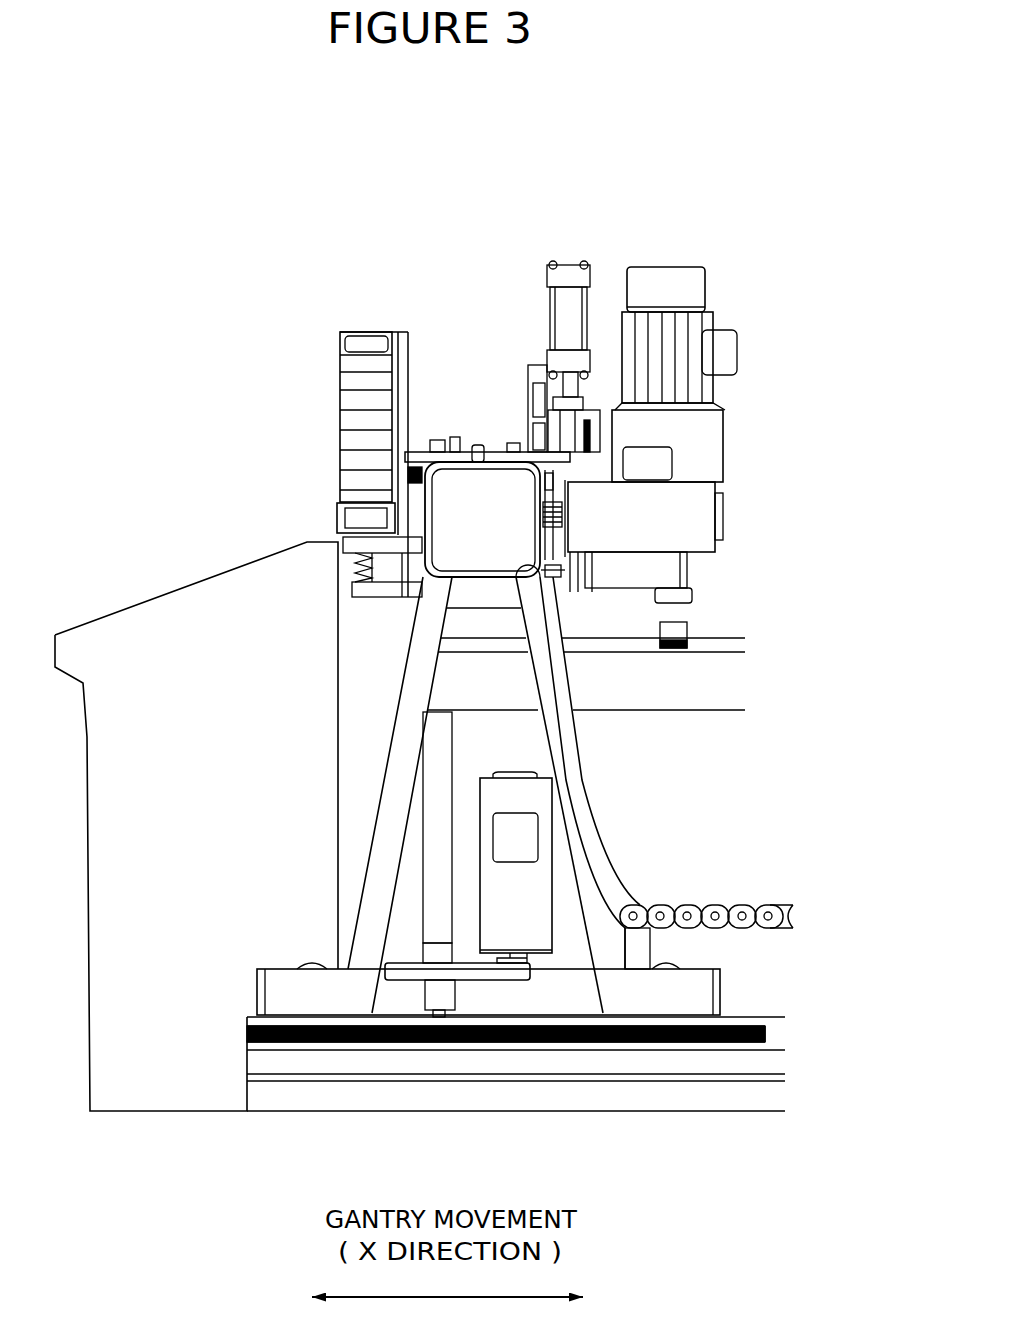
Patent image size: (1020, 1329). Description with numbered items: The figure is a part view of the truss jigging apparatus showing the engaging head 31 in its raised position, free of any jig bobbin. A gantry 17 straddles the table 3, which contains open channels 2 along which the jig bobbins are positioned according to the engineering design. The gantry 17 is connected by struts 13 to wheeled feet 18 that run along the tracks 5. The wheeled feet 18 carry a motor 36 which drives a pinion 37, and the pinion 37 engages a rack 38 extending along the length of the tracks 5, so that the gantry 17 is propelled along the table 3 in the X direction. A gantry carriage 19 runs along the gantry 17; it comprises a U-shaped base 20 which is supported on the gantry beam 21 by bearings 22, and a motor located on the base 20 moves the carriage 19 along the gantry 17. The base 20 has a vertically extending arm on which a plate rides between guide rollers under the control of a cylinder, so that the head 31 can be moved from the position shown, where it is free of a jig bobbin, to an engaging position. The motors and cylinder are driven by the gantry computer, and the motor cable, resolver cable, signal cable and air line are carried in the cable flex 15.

The open channel 2 is at (690, 640).
The table 3 is at (707, 682).
The tracks 5 is at (760, 1020).
The struts 13 is at (417, 687).
The cable flex 15 is at (363, 400).
The gantry 17 is at (263, 427).
The wheeled feet 18 is at (285, 995).
The gantry carriage 19 is at (420, 445).
The U-shaped base 20 is at (493, 452).
The gantry beam 21 is at (430, 525).
The bearings 22 is at (420, 483).
The head 31 is at (695, 582).
The motor 36 is at (536, 797).
The pinion 37 is at (443, 1040).
The rack 38 is at (590, 1043).